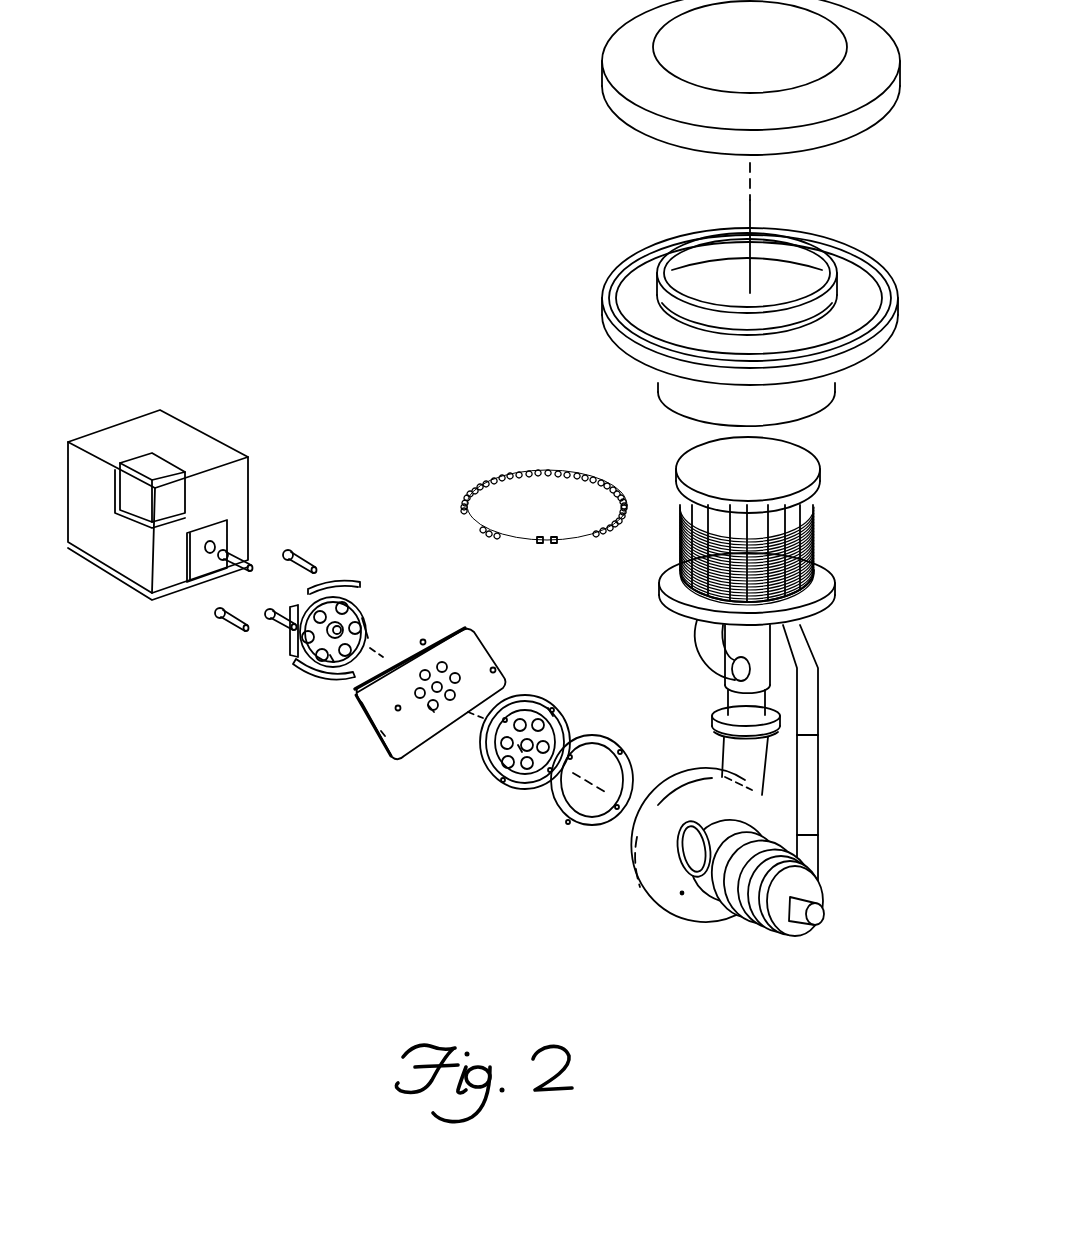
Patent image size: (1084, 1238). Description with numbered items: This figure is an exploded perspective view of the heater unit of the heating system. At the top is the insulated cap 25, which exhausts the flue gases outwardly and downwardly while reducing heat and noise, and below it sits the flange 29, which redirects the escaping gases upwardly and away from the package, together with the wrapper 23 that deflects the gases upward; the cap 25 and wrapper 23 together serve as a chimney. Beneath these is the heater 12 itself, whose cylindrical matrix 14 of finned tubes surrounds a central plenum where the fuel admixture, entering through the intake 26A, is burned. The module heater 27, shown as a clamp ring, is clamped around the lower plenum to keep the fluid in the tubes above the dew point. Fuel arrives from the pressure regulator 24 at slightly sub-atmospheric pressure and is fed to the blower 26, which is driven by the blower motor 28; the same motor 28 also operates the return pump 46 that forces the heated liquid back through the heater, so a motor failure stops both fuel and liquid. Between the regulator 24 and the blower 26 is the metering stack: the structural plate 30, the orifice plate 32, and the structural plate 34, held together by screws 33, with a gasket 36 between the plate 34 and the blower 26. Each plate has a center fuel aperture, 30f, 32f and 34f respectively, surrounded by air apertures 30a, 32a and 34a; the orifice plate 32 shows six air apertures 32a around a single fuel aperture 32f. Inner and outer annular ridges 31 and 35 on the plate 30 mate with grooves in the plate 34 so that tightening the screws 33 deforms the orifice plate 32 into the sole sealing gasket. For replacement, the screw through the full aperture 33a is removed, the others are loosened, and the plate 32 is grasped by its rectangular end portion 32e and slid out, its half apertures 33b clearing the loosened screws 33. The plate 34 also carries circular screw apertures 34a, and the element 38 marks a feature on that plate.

The insulated cap 25 is at (751, 146).
The flange 29 is at (612, 285).
The wrapper 23 is at (746, 404).
The heater unit 12 is at (748, 475).
The cylindrical matrix 14 is at (810, 548).
The intake 26A is at (774, 645).
The blower 26 is at (705, 771).
The blower motor 28 is at (730, 918).
The return pump 46 is at (797, 927).
The pressure regulator 24 is at (248, 524).
The screws 33 is at (215, 623).
The module heater 27 is at (478, 478).
The structural plate 30 is at (305, 668).
The air apertures 30a is at (343, 622).
The inner annular ridge 31 is at (345, 627).
The outer annular ridge 35 is at (375, 627).
The center aperture 30f is at (330, 657).
The orifice plate 32 is at (430, 693).
The fuel aperture 32f is at (430, 672).
The half apertures 33b is at (440, 640).
The screw-receiving aperture 33a is at (396, 709).
The rectangular end portion 32e is at (383, 733).
The air apertures 32a is at (430, 709).
The structural plate 34 is at (493, 783).
The air apertures 34a is at (527, 748).
The flange rim 38 is at (550, 712).
The center aperture 34f is at (520, 750).
The gasket 36 is at (567, 822).